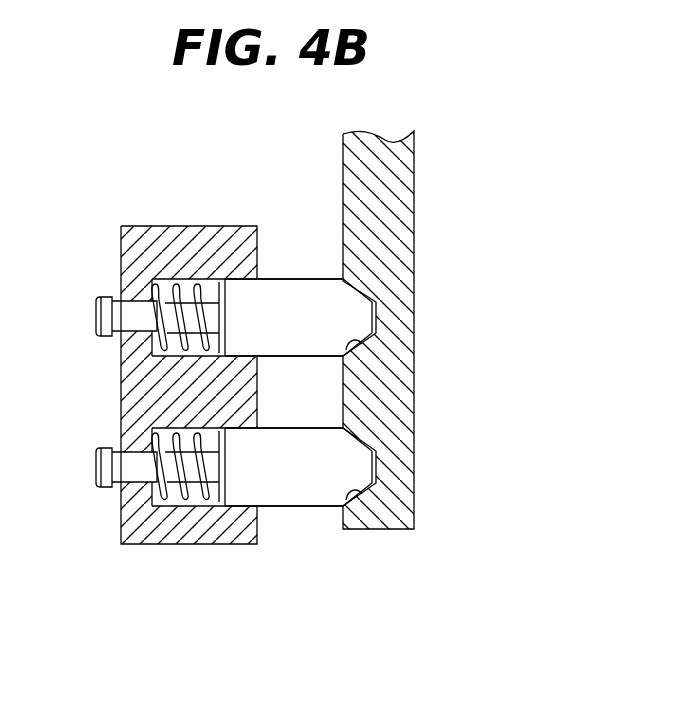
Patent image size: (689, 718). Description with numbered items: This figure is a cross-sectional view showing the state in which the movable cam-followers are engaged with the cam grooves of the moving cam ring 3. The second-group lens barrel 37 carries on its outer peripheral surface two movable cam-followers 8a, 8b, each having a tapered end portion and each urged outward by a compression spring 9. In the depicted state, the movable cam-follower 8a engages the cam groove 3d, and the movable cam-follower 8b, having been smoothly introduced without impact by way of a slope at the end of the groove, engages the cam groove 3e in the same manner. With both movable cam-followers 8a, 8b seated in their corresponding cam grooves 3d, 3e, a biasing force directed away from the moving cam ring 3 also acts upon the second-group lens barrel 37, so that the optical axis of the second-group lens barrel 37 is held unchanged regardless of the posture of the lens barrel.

The moving cam ring 3 is at (415, 347).
The cam groove 3d is at (415, 388).
The cam groove 3e is at (385, 530).
The movable cam-follower 8a is at (288, 295).
The movable cam-follower 8b is at (324, 493).
The compression spring 9 is at (153, 315).
The second-group lens barrel 37 is at (153, 543).